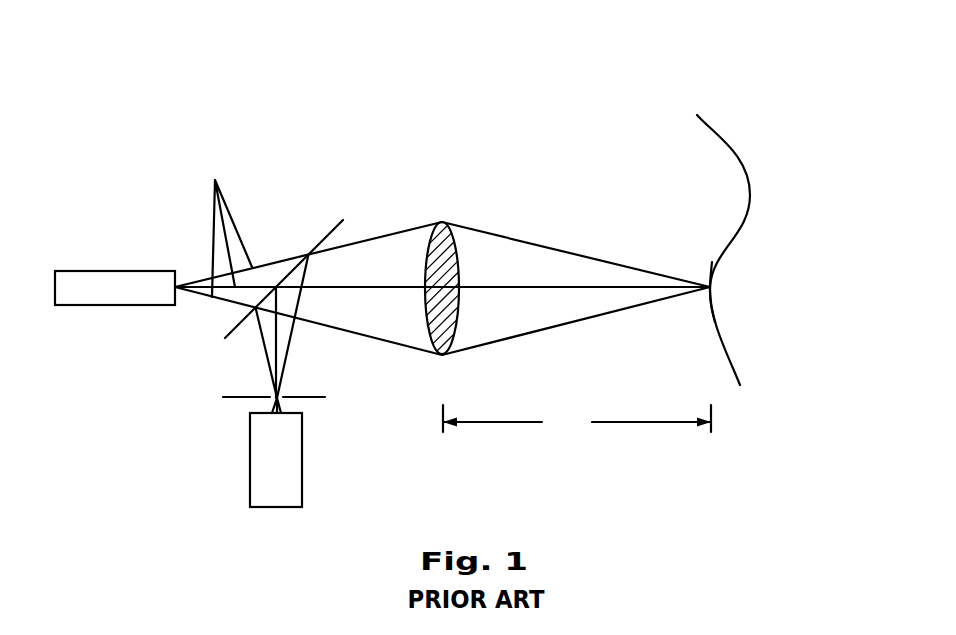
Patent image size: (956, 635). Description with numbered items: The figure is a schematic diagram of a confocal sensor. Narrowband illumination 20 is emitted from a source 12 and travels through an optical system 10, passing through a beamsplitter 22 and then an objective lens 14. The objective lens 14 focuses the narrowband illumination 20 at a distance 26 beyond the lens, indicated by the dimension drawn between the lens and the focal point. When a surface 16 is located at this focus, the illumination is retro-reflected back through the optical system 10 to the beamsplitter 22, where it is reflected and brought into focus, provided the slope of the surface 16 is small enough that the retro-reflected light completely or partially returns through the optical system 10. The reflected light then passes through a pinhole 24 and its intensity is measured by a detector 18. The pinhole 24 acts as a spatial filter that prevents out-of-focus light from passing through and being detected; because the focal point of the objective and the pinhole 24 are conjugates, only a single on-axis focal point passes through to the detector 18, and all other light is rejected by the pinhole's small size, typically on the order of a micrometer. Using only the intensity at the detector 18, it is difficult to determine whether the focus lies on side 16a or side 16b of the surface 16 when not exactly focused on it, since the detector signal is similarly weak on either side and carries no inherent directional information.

The optical system 10 is at (392, 70).
The source 12 is at (140, 287).
The objective lens 14 is at (443, 262).
The surface 16 is at (710, 287).
The side of surface 16a is at (678, 272).
The side of surface 16b is at (743, 278).
The detector 18 is at (290, 472).
The narrowband illumination 20 is at (227, 222).
The beamsplitter 22 is at (330, 232).
The pinhole 24 is at (265, 400).
The distance 26 is at (577, 420).